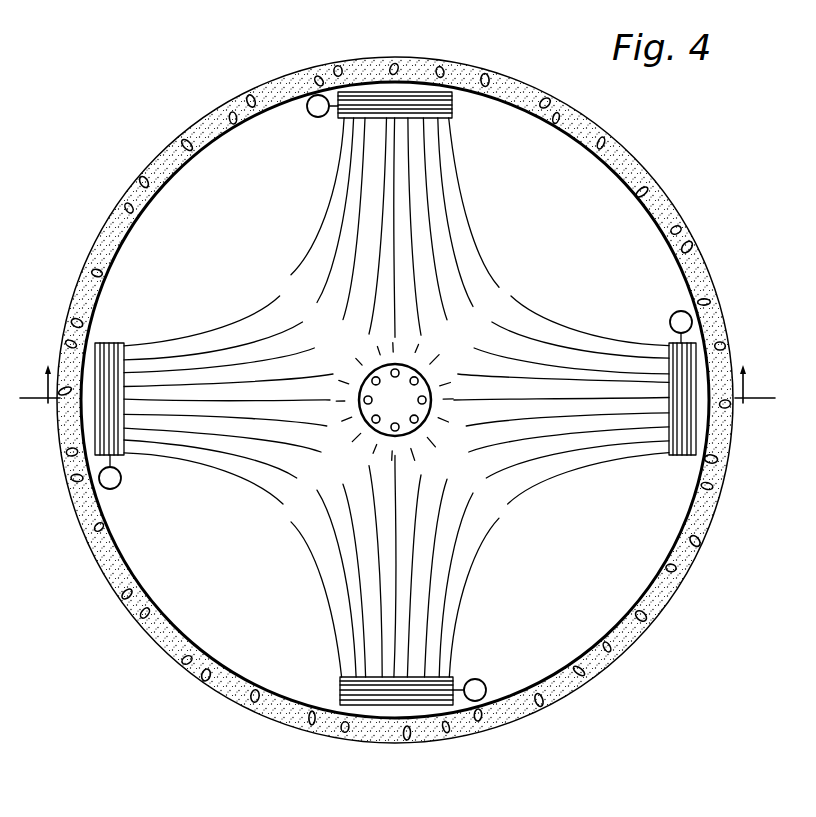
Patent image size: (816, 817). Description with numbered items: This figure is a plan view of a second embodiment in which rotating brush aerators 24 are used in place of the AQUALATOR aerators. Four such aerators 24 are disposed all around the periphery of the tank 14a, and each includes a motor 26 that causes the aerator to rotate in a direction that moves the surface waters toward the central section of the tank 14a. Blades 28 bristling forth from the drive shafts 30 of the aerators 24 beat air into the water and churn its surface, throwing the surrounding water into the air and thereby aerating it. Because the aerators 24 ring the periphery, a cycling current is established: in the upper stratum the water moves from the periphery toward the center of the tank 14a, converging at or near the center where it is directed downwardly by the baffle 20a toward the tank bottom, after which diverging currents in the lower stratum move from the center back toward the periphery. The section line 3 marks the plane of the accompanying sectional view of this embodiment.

The annular wall / rim of container 14a is at (710, 264).
The central hub / core 20a is at (436, 386).
The support bar / electrode 24 is at (406, 89).
The rod / conduit 26 is at (309, 113).
The outer strip of bar 28 is at (452, 120).
The inner strip of bar 30 is at (343, 113).
The section line 3- 3 is at (397, 394).